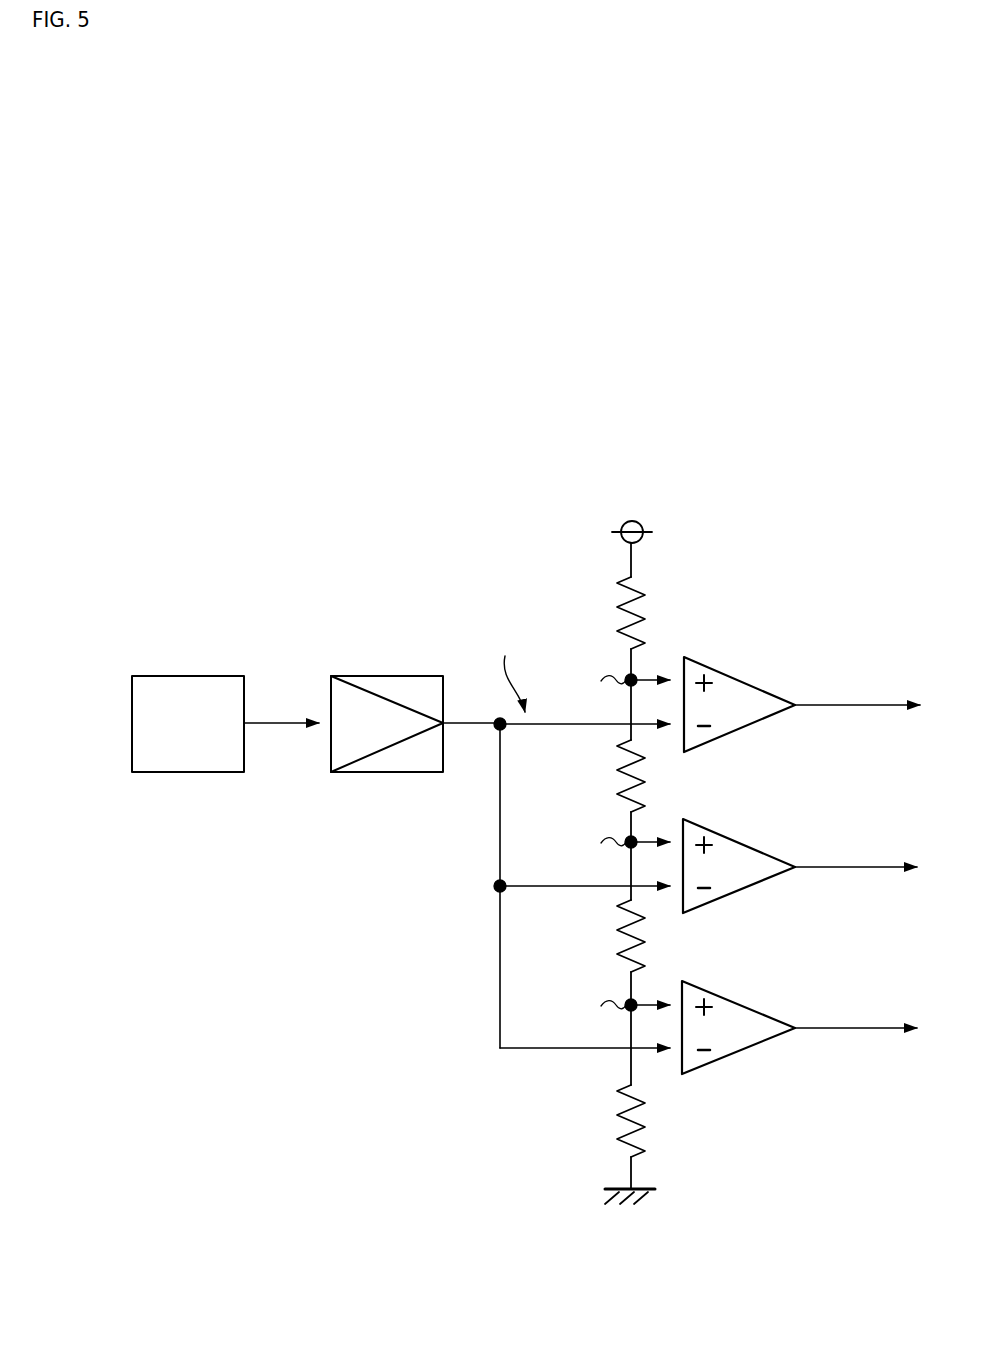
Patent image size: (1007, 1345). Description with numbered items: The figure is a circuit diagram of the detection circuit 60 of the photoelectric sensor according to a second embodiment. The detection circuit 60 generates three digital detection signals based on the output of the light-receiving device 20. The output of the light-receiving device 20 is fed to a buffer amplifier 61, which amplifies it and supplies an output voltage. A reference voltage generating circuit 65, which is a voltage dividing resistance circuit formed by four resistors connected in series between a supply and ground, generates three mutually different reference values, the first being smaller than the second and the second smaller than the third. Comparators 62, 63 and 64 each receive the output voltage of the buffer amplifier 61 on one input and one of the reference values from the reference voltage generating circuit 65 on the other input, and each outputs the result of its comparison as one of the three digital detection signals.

The light-receiving device 20 is at (188, 724).
The detection circuit 60 is at (366, 507).
The buffer amplifier 61 is at (392, 676).
The comparator 62 is at (763, 1013).
The comparator 63 is at (763, 851).
The comparator 64 is at (763, 689).
The reference voltage generating circuit 65 is at (590, 566).